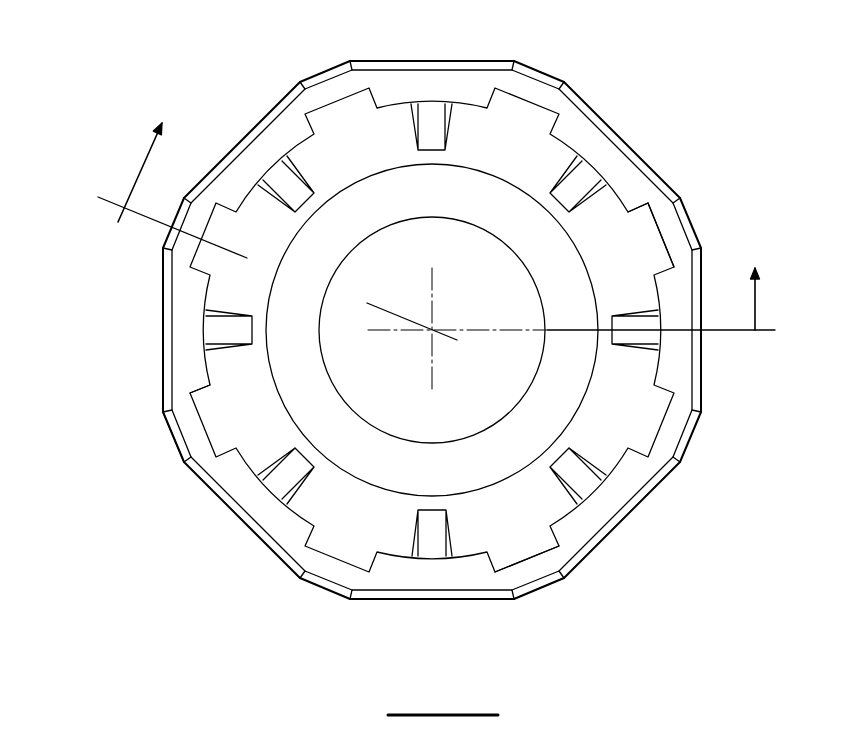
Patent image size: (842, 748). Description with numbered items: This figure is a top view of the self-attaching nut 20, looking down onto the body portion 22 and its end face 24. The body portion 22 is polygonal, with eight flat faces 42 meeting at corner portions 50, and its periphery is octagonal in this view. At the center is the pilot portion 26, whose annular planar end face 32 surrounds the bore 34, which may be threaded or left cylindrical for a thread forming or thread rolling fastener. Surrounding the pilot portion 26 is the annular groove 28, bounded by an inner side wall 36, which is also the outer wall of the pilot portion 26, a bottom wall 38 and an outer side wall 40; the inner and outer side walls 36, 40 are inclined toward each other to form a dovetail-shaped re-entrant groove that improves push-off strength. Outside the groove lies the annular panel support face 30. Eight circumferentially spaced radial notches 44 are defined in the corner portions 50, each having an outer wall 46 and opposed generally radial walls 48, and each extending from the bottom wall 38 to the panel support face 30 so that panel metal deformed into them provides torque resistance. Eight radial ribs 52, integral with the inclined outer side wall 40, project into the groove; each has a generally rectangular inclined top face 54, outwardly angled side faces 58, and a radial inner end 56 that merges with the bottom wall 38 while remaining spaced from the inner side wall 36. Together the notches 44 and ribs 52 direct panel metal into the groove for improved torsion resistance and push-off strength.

The self-attaching nut 20 is at (637, 120).
The body portion 22 is at (160, 348).
The end face 24 is at (615, 173).
The central pilot portion 26 is at (541, 413).
The annular groove 28 is at (340, 138).
The annular panel support face 30 is at (433, 92).
The end face 32 is at (445, 199).
The bore 34 is at (530, 270).
The inner side wall 36 is at (518, 187).
The bottom wall 38 is at (248, 437).
The outer side wall 40 is at (248, 200).
The flat faces 42 is at (161, 320).
The radial notches 44 is at (653, 403).
The outer wall 46 is at (662, 233).
The radial walls 48 is at (668, 265).
The corner portions 50 is at (700, 432).
The radial ribs 52 is at (291, 188).
The top face 54 is at (222, 340).
The radial inner ends 56 is at (240, 330).
The side faces 58 is at (210, 316).